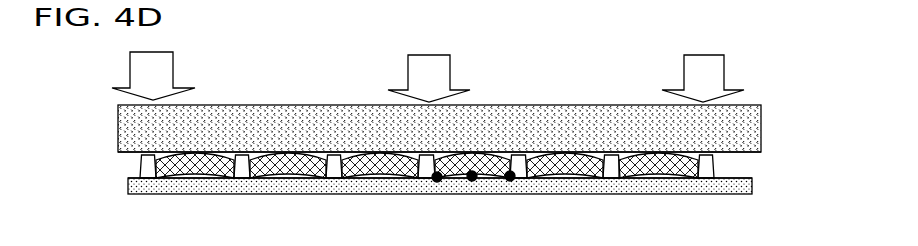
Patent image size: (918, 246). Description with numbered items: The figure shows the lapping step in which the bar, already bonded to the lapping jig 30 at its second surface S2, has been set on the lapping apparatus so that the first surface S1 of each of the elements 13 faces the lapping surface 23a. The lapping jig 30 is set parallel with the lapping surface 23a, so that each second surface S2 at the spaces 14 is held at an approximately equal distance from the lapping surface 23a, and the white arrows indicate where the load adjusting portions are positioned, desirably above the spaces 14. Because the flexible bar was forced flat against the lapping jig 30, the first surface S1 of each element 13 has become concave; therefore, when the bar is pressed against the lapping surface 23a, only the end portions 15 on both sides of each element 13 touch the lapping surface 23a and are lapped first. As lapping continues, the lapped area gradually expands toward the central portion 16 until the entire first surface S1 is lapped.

The lapping jig 30 is at (752, 103).
The lapping surface 23a is at (752, 183).
The elements 13 is at (290, 175).
The central portion 16 is at (476, 156).
The spaces 14 is at (511, 181).
The end portions 15 is at (472, 181).
The first surface S1 is at (273, 178).
The second surface S2 is at (244, 156).